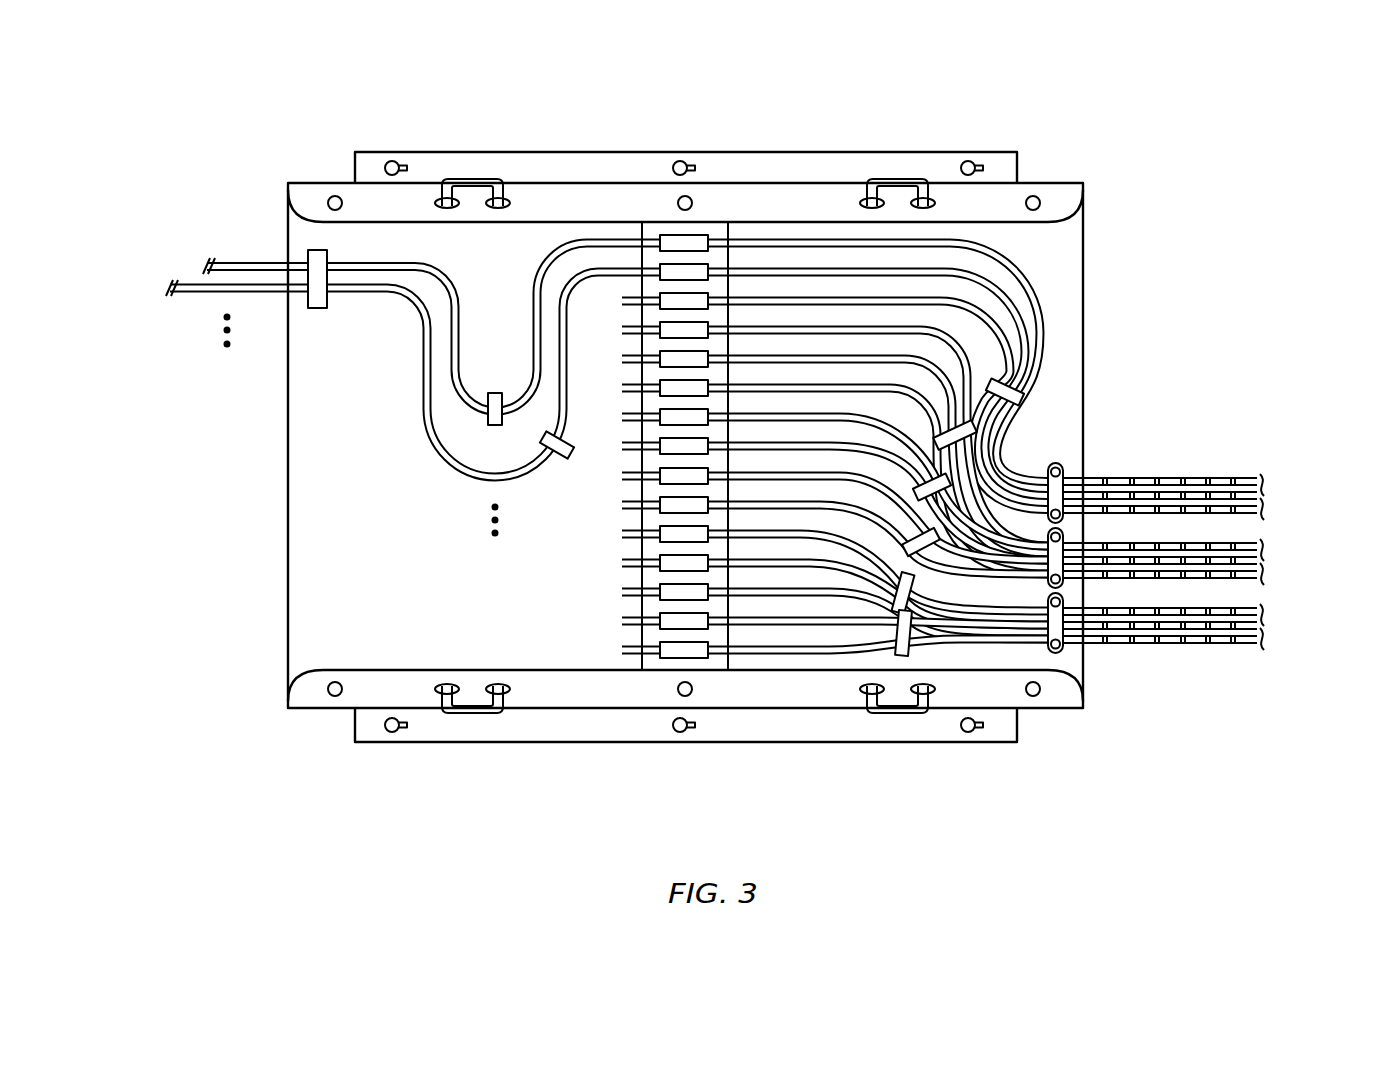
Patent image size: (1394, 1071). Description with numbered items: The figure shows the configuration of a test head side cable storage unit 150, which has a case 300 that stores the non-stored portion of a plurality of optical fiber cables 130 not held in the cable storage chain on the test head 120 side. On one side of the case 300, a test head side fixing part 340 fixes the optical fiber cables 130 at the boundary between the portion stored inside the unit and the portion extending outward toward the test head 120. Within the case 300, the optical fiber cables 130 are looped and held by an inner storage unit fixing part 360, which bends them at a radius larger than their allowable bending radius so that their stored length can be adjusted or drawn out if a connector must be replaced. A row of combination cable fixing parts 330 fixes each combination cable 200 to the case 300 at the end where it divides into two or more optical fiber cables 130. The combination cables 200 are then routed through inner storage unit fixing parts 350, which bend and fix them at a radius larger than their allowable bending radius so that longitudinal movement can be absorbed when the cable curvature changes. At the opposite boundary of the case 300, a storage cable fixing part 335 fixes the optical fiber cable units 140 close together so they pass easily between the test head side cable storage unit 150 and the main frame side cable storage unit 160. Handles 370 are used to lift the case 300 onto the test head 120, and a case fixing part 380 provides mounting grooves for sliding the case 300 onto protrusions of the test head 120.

The test head 120 is at (152, 279).
The optical fiber cables 130 is at (421, 411).
The optical fiber cable units 140 is at (1168, 477).
The test head side cable storage unit 150 is at (1266, 78).
The main frame side cable storage unit 160 is at (1298, 556).
The combination cable 200 is at (1010, 437).
The case 300 is at (710, 742).
The combination cable fixing part 330 is at (694, 235).
The storage cable fixing part 335 is at (1062, 655).
The test head side fixing part 340 is at (318, 308).
The inner storage unit fixing part 350 is at (908, 646).
The inner storage unit fixing part 360 is at (567, 458).
The handles 370 is at (472, 178).
The case fixing part 380 is at (1002, 151).